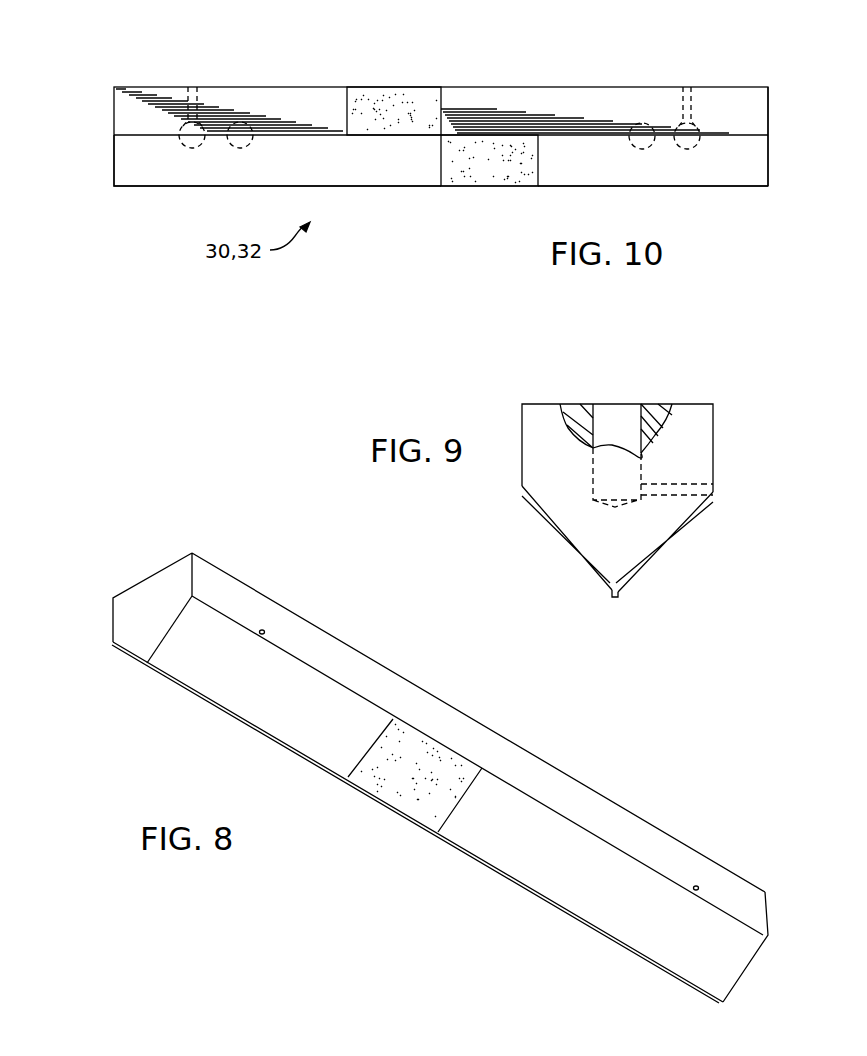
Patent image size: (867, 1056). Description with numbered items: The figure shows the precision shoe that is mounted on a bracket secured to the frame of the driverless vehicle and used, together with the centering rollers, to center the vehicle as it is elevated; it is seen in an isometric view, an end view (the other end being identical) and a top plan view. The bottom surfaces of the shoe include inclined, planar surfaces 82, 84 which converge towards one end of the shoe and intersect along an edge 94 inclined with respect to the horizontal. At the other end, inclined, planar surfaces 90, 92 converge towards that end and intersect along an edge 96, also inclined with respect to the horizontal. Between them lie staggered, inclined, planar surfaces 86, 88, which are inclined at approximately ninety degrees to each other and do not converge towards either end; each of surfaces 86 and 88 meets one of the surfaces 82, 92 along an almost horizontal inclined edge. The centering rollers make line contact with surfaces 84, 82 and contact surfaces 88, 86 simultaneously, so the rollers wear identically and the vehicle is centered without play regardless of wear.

In FIG. 10, the inclined planar surface 82 is at (130, 166).
In FIG. 9, the inclined planar surface 82 is at (531, 503).
In FIG. 8, the inclined planar surface 82 is at (163, 672).
In FIG. 10, the inclined planar surface 84 is at (123, 116).
In FIG. 9, the inclined planar surface 84 is at (682, 530).
In FIG. 8, the inclined planar surface 84 is at (185, 632).
In FIG. 10, the staggered inclined planar surface 86 is at (497, 172).
In FIG. 9, the staggered inclined planar surface 86 is at (558, 540).
In FIG. 8, the staggered inclined planar surface 86 is at (463, 852).
In FIG. 10, the staggered inclined planar surface 88 is at (400, 102).
In FIG. 9, the staggered inclined planar surface 88 is at (657, 558).
In FIG. 8, the staggered inclined planar surface 88 is at (417, 750).
In FIG. 10, the inclined planar surface 90 is at (577, 173).
In FIG. 8, the inclined planar surface 90 is at (570, 915).
In FIG. 10, the inclined planar surface 92 is at (767, 108).
In FIG. 8, the inclined planar surface 92 is at (725, 963).
In FIG. 10, the edge 94 is at (314, 136).
In FIG. 9, the edge 94 is at (612, 600).
In FIG. 8, the edge 94 is at (222, 707).
In FIG. 10, the edge 96 is at (730, 137).
In FIG. 9, the edge 96 is at (606, 594).
In FIG. 8, the edge 96 is at (652, 965).